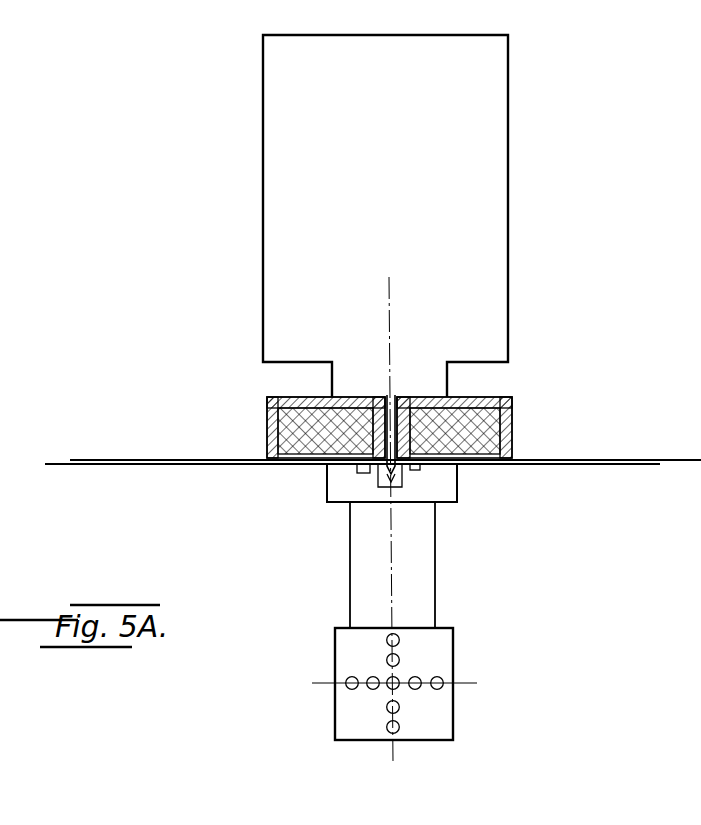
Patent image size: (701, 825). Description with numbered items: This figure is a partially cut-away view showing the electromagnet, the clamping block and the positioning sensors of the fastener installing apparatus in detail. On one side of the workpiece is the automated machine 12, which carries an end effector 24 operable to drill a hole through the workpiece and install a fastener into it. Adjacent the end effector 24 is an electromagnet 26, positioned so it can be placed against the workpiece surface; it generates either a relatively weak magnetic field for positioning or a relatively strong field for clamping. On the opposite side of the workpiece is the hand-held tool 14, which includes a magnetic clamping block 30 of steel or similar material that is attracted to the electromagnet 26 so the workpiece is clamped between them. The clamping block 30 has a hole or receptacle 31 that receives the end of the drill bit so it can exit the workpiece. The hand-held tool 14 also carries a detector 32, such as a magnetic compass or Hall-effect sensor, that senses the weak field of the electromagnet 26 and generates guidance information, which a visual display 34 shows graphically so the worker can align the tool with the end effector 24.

The automated machine 12 is at (256, 250).
The end effector 24 is at (405, 215).
The electromagnet 26 is at (283, 420).
The magnetic clamping block 30 is at (330, 490).
The hole or receptacle 31 is at (387, 484).
The detector 32 is at (420, 470).
The hand-held tool 14 is at (444, 577).
The visual display 34 is at (432, 660).